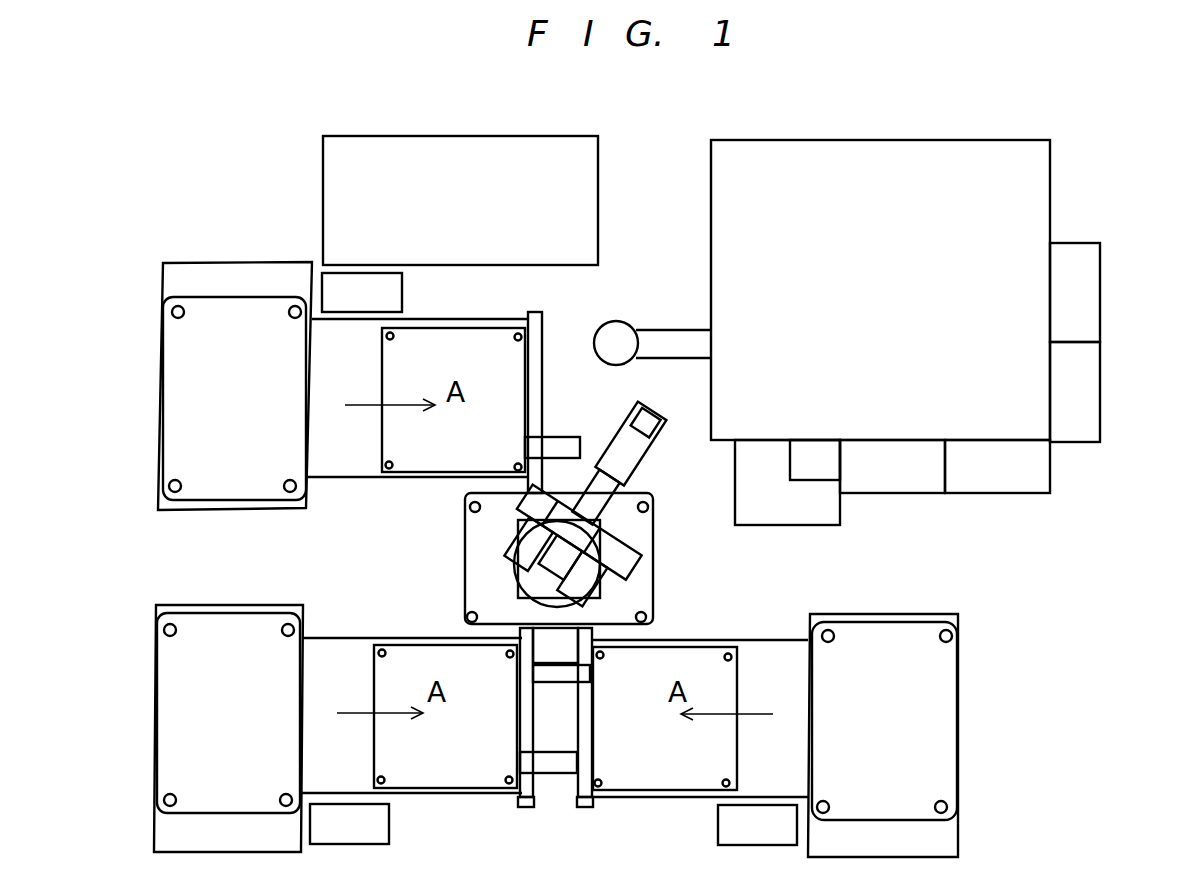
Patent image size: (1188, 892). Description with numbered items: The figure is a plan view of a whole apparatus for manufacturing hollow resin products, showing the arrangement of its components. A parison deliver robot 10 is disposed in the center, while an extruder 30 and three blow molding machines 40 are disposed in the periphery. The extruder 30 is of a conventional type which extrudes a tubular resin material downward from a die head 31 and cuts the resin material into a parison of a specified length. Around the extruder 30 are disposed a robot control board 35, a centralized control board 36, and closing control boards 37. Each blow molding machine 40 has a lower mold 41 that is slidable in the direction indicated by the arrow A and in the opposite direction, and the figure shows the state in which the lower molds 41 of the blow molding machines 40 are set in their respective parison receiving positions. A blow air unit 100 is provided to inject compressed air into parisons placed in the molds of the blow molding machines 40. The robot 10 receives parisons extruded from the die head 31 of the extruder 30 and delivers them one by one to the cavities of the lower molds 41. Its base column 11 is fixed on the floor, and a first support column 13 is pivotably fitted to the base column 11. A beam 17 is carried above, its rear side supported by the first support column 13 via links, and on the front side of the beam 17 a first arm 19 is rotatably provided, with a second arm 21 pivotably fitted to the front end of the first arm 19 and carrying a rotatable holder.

The parison deliver robot 10 is at (557, 492).
The base column 11 is at (518, 590).
The first support column 13 is at (617, 523).
The beam 17 is at (590, 490).
The first arm 19 is at (630, 444).
The second arm 21 is at (646, 423).
The extruder 30 is at (793, 205).
The die head 31 is at (617, 338).
The robot control board 35 is at (785, 515).
The centralized control board 36 is at (890, 493).
The closing control boards 37 is at (1087, 308).
The blow molding machines 40 is at (247, 413).
The lower mold 41 is at (423, 343).
The blow air unit 100 is at (510, 150).